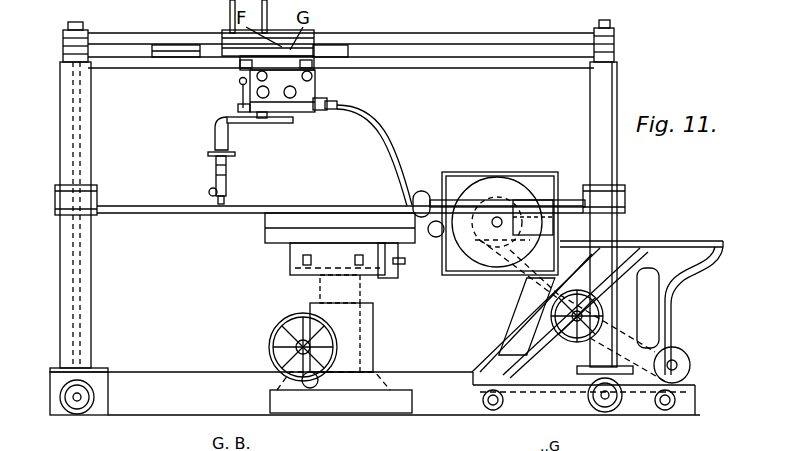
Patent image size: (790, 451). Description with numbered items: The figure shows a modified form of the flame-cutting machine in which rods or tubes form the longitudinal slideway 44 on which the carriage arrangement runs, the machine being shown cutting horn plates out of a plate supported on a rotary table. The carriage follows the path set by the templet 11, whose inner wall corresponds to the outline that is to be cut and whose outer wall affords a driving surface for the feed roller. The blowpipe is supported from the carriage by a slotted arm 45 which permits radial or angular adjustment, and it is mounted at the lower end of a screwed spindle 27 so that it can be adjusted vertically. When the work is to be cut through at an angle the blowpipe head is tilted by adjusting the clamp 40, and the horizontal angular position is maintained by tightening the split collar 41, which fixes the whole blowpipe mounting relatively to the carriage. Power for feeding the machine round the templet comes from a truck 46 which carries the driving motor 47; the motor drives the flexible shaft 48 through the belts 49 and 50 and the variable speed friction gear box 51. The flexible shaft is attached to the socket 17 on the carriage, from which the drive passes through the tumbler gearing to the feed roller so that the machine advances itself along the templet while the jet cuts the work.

The templet 11 is at (200, 52).
The longitudinal slideway 44 is at (477, 63).
The socket 17 is at (322, 110).
The flexible shaft 48 is at (382, 136).
The truck 46 is at (245, 123).
The slotted arm 45 is at (268, 124).
The screwed spindle 27 is at (226, 160).
The clamp 40 is at (209, 191).
The split collar 41 is at (226, 201).
The variable speed friction gear box 51 is at (510, 171).
The belt 50 is at (581, 290).
The driving motor 47 is at (674, 348).
The belt 49 is at (620, 345).